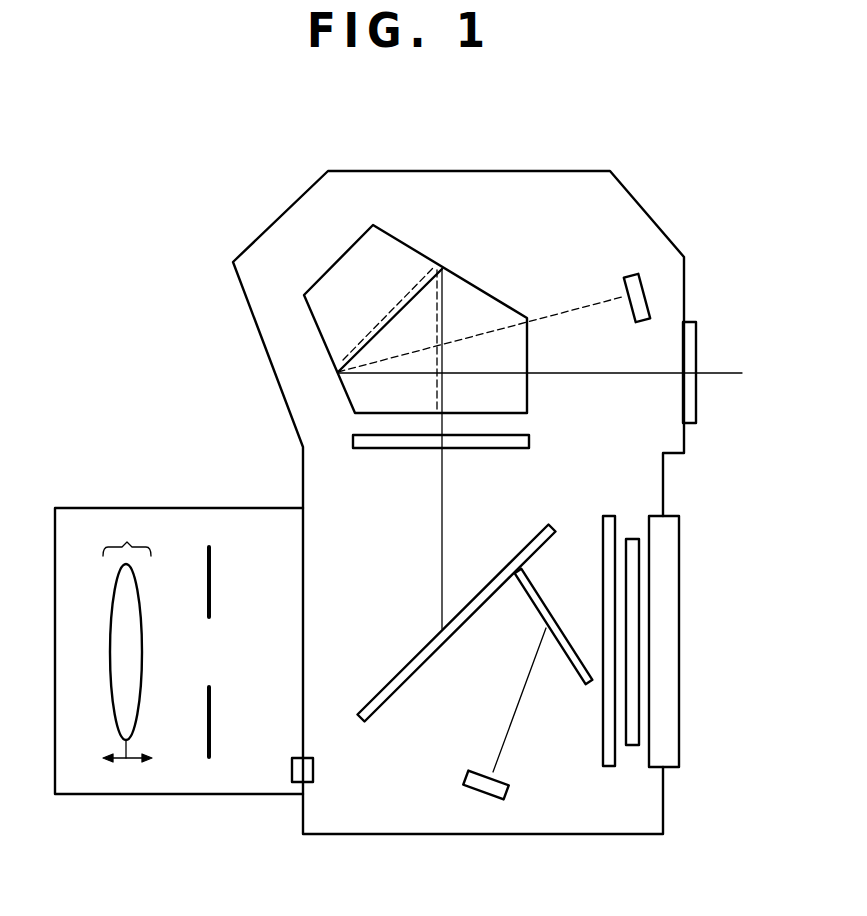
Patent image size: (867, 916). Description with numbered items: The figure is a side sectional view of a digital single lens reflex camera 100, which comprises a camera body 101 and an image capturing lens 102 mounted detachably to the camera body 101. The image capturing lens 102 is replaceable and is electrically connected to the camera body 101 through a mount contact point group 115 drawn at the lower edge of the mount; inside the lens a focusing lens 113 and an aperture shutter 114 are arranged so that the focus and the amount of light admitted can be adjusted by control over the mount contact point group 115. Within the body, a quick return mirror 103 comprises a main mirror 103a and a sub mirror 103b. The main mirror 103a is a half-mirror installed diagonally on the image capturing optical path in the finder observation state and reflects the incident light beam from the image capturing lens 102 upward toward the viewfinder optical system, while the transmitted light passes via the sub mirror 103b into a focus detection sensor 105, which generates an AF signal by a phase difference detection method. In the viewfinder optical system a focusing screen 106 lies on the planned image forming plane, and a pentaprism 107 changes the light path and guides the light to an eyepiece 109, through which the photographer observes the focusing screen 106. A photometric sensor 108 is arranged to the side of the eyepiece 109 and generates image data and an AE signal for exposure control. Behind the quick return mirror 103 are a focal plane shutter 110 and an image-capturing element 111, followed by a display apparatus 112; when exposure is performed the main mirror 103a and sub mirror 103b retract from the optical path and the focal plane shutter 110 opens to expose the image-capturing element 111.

The digital single lens reflex camera 100 is at (458, 449).
The camera body 101 is at (357, 170).
The image capturing lens 102 is at (176, 643).
The quick return mirror 103 is at (468, 706).
The main mirror 103a is at (380, 712).
The sub mirror 103b is at (563, 663).
The focus detection sensor 105 is at (487, 799).
The focusing screen 106 is at (353, 440).
The pentaprism 107 is at (480, 286).
The photometric sensor 108 is at (633, 274).
The eyepiece 109 is at (697, 342).
The focal plane shutter 110 is at (609, 767).
The image-capturing element 111 is at (632, 746).
The display apparatus 112 is at (669, 768).
The focusing lens 113 is at (122, 541).
The aperture shutter 114 is at (207, 713).
The mount contact point group 115 is at (292, 763).